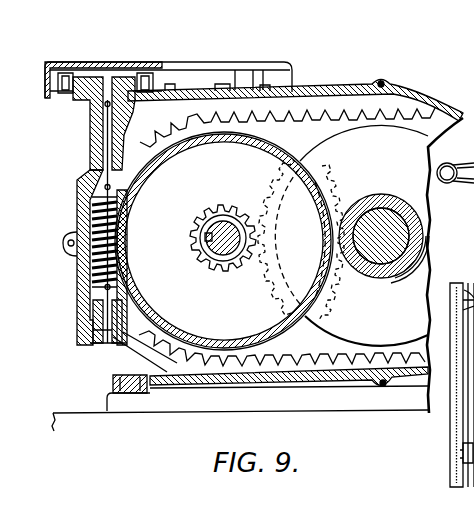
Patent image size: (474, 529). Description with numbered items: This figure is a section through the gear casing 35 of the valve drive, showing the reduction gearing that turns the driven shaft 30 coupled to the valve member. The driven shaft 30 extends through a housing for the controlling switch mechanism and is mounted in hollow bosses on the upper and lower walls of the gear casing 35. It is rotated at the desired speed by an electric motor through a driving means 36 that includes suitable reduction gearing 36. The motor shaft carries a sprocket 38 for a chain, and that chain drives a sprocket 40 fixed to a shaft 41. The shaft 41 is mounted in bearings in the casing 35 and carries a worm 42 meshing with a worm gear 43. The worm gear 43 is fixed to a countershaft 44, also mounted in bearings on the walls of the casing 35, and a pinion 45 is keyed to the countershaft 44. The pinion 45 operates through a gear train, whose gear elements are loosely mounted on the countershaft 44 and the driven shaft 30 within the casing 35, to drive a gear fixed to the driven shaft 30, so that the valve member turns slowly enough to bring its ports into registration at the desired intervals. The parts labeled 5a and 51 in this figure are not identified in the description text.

The driven shaft 30 is at (393, 197).
The gear casing 35 is at (337, 92).
The driving means 36 is at (287, 239).
The sprocket 38 is at (468, 480).
The sprocket 40 is at (62, 93).
The shaft 41 is at (103, 123).
The worm 42 is at (90, 222).
The worm gear 43 is at (224, 241).
The countershaft 44 is at (212, 248).
The pinion 45 is at (212, 270).
The shaft 5a is at (467, 160).
The rod 51 is at (462, 348).